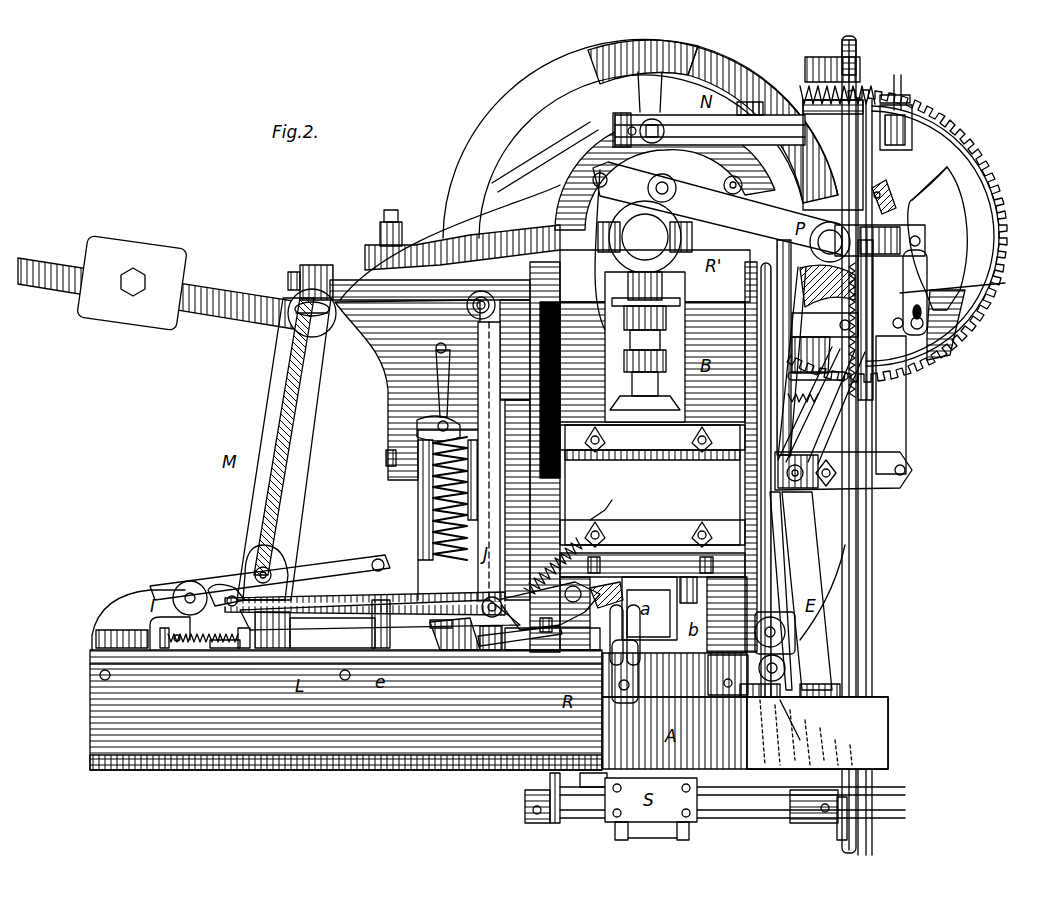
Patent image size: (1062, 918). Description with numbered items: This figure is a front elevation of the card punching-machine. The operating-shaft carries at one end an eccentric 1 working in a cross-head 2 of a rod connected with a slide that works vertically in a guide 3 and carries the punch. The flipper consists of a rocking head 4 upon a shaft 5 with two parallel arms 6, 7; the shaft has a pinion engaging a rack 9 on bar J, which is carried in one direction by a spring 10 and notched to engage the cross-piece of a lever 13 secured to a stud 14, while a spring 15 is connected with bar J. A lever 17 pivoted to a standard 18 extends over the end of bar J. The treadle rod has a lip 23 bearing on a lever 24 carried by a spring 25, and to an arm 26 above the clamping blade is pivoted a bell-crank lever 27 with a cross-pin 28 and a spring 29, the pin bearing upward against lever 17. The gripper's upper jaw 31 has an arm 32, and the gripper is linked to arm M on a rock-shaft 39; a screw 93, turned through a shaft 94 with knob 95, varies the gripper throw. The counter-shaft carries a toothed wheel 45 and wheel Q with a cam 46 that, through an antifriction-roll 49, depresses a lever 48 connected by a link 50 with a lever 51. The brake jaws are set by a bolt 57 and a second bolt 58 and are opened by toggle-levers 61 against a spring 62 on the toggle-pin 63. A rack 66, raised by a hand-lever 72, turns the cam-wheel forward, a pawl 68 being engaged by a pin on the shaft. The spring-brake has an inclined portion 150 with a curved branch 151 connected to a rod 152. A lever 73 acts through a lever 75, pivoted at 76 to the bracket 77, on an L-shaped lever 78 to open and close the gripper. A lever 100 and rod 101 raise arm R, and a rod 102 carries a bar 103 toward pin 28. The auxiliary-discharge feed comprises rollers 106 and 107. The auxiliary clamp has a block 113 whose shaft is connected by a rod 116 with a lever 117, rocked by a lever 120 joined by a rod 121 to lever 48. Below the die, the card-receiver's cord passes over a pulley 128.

The eccentric 1 is at (645, 237).
The cross-head 2 is at (596, 255).
The guide 3 is at (652, 486).
The rocking head 4 is at (549, 606).
The shaft 5 is at (606, 597).
The arm 6 is at (553, 566).
The arm 7 is at (545, 635).
The rack 9 is at (610, 580).
The spring 10 is at (570, 540).
The lever 13 is at (510, 525).
The stud 14 is at (470, 304).
The spring 15 is at (431, 528).
The lever 17 is at (285, 569).
The standard 18 is at (365, 593).
The lip 23 is at (205, 629).
The lever 24 is at (215, 656).
The spring 25 is at (178, 652).
The arm 26 is at (149, 606).
The bell-crank lever 27 is at (215, 588).
The cross-pin 28 is at (231, 596).
The spring 29 is at (240, 650).
The upper jaw 31 is at (550, 640).
The arm 32 is at (483, 652).
The rock-shaft 39 is at (298, 300).
The toothed wheel 45 is at (945, 120).
The cam 46 is at (938, 238).
The lever 48 is at (823, 333).
The antifriction-roll 49 is at (846, 340).
The link 50 is at (929, 305).
The lever 51 is at (880, 240).
The bolt 57 is at (655, 120).
The bolt 58 is at (620, 124).
The toggle-levers 61 is at (911, 128).
The spring 62 is at (812, 80).
The toggle-pin 63 is at (900, 72).
The rack 66 is at (878, 372).
The pawl 68 is at (892, 190).
The hand-lever 72 is at (548, 776).
The lever 73 is at (445, 255).
The lever 75 is at (424, 496).
The pivot 76 is at (386, 456).
The bracket 77 is at (390, 405).
The L-shaped lever 78 is at (445, 650).
The screw 93 is at (288, 624).
The shaft 94 is at (275, 410).
The knob 95 is at (296, 328).
The lever 100 is at (717, 208).
The rod 101 is at (598, 305).
The rod 102 is at (449, 392).
The bar 103 is at (380, 612).
The roller 106 is at (775, 630).
The roller 107 is at (786, 666).
The block 113 is at (512, 652).
The rod 116 is at (796, 720).
The lever 117 is at (880, 693).
The lever 120 is at (840, 546).
The rod 121 is at (906, 413).
The pulley 128 is at (448, 680).
The inclined portion 150 is at (836, 407).
The curved branch 151 is at (963, 296).
The rod 152 is at (809, 404).